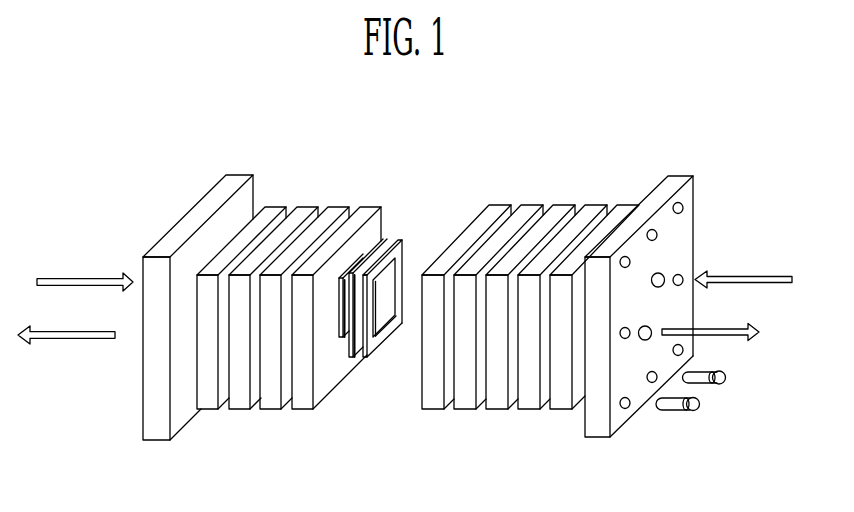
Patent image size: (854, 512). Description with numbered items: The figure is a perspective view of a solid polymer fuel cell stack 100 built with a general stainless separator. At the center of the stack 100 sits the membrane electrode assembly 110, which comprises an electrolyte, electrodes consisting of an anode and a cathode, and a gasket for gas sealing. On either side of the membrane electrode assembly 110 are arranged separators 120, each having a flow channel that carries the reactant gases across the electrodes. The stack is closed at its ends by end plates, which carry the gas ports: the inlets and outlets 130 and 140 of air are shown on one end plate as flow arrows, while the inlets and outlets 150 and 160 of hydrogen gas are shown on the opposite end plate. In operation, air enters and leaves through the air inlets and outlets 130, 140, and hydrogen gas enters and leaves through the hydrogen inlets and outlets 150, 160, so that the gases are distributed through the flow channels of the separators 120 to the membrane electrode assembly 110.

The solid polymer fuel cell stack 100 is at (790, 74).
The membrane electrode assembly 110 is at (395, 241).
The separator 120 is at (272, 410).
The inlet and outlet of air 130 is at (72, 338).
The inlet and outlet of air 140 is at (80, 278).
The inlet and outlet of hydrogen gas 150 is at (748, 275).
The inlet and outlet of hydrogen gas 160 is at (727, 335).